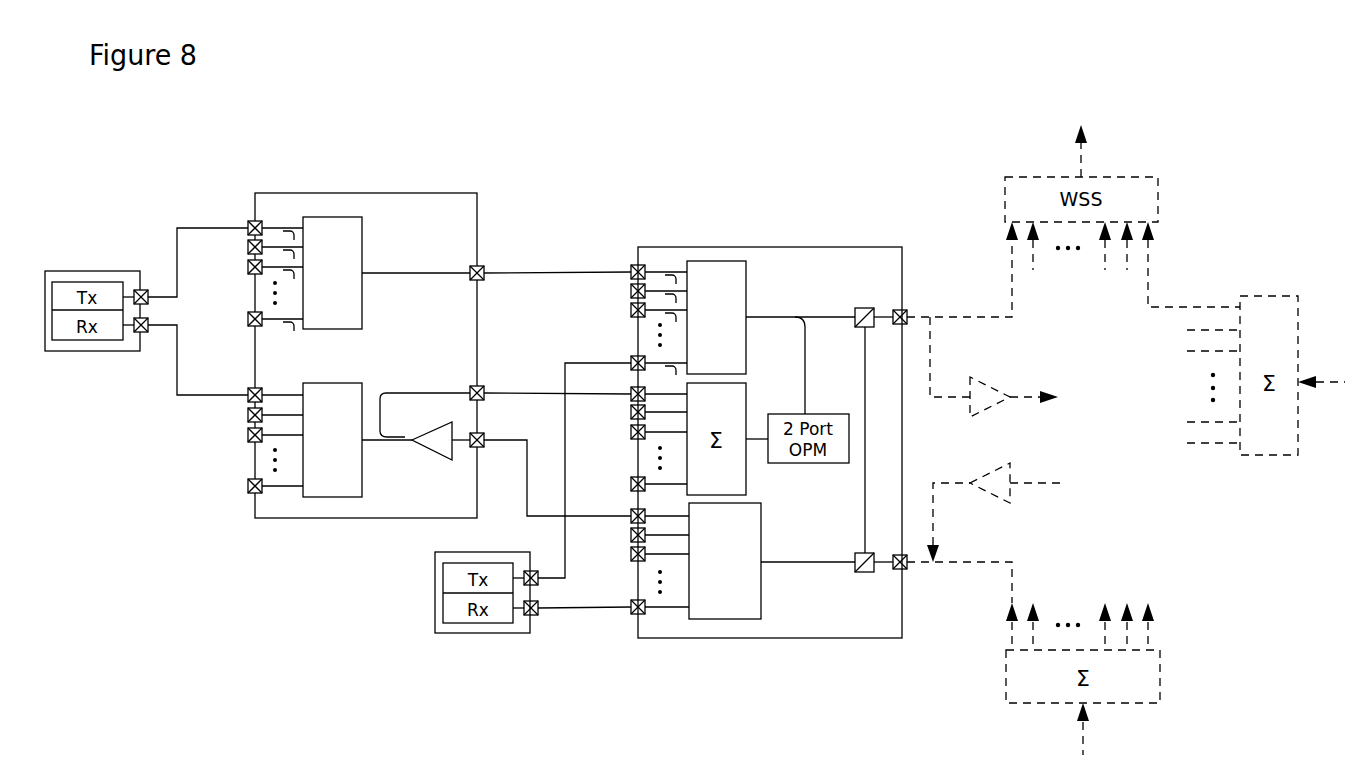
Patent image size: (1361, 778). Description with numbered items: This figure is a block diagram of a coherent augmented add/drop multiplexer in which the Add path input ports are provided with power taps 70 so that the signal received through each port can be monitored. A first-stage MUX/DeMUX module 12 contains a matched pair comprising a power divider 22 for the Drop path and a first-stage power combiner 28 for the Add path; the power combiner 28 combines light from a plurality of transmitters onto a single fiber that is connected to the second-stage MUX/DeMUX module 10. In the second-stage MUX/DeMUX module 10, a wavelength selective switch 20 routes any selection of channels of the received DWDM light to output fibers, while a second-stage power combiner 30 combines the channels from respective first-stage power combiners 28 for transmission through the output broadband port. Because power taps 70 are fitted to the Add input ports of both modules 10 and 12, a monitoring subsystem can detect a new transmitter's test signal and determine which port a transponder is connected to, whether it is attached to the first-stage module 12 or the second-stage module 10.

The power taps 70 is at (287, 218).
The first-stage MUX/DeMUX module 12 is at (444, 198).
The first-stage power combiner 28 is at (365, 296).
The power divider 22 is at (365, 383).
The second-stage MUX/DeMUX module 10 is at (799, 250).
The second-stage power combiner 30 is at (750, 318).
The wavelength selective switch 20 is at (750, 561).